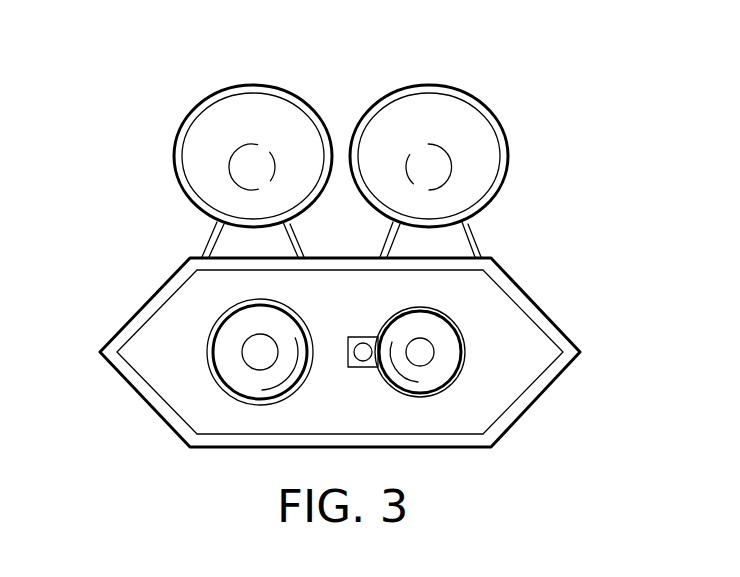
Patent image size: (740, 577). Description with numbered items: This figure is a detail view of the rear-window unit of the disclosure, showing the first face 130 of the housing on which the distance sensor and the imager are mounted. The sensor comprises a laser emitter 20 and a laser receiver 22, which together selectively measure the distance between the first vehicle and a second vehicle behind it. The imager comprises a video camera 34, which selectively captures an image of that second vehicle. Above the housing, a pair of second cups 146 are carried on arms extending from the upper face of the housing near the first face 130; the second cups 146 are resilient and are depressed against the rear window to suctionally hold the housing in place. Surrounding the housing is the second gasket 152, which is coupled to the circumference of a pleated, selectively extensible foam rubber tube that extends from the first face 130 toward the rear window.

The second cups 146 is at (393, 93).
The second gasket 152 is at (137, 311).
The first face 130 is at (372, 316).
The video camera 34 is at (220, 377).
The laser receiver 22 is at (453, 333).
The laser emitter 20 is at (363, 356).